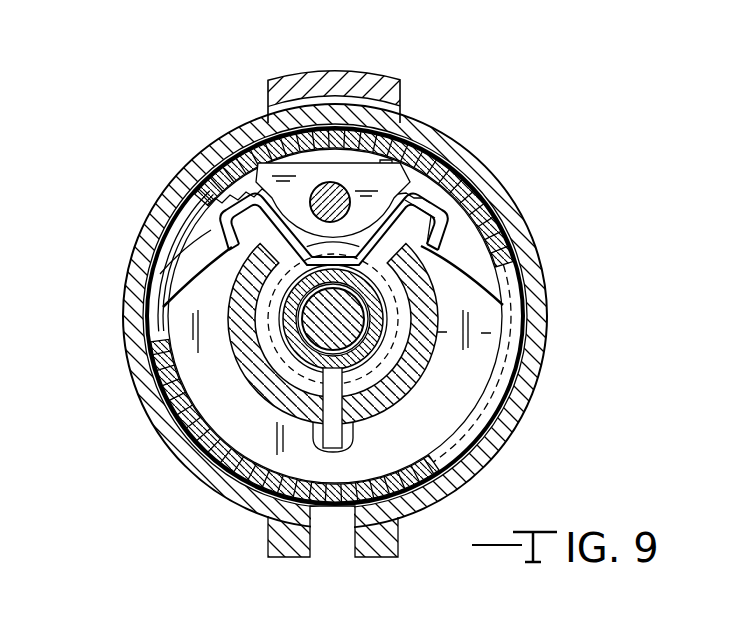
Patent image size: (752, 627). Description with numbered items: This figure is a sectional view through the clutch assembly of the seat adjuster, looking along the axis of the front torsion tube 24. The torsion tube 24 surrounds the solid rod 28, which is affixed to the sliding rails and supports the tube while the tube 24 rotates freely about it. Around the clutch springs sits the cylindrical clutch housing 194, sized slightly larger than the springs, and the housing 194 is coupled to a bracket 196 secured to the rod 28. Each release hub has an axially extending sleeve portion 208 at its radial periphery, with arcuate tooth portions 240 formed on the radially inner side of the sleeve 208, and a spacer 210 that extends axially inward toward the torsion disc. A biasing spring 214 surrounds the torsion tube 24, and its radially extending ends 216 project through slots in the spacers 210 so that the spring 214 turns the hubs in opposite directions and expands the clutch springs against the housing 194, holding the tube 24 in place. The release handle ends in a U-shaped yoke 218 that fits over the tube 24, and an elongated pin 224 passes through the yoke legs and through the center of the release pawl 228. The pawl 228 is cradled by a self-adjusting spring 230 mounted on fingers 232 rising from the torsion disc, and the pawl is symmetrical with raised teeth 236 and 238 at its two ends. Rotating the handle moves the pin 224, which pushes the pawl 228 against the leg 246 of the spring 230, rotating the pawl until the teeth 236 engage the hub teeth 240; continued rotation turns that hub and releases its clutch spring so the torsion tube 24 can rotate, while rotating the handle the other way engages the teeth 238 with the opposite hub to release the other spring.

The front torsion tube 24 is at (285, 322).
The solid rod 28 is at (315, 370).
The cylindrical clutch housing 194 is at (522, 438).
The bracket 196 is at (393, 548).
The sleeve portion 208 is at (150, 248).
The spacer 210 is at (388, 418).
The biasing spring 214 is at (522, 322).
The radially extending ends 216 is at (352, 433).
The U-shaped yoke 218 is at (362, 78).
The elongated pin 224 is at (310, 200).
The release pawl 228 is at (215, 152).
The self-adjusting spring 230 is at (447, 225).
The fingers 232 is at (162, 280).
The raised teeth 236 is at (388, 163).
The raised teeth 238 is at (272, 168).
The arcuate tooth portions 240 is at (432, 195).
The leg 246 is at (432, 245).